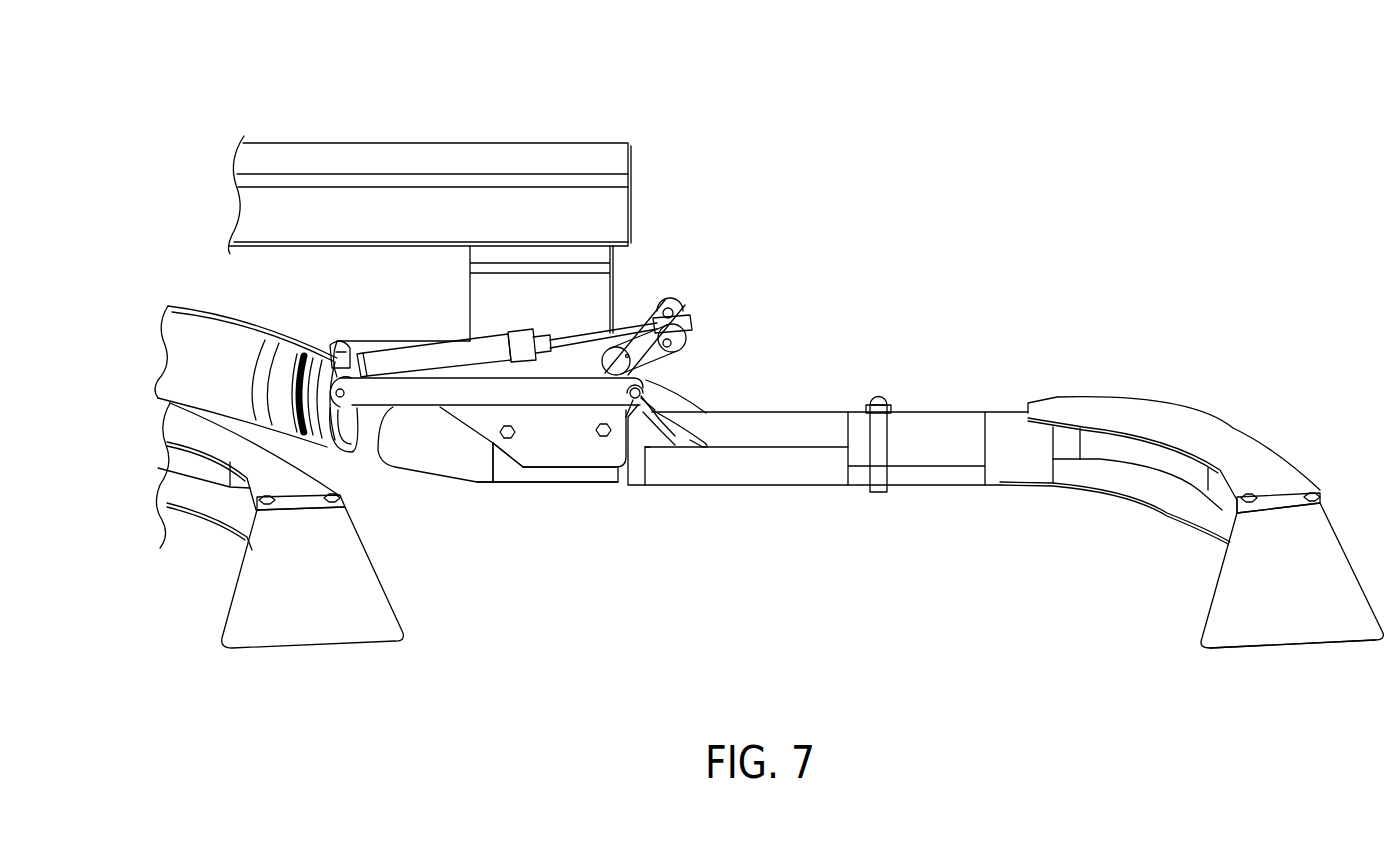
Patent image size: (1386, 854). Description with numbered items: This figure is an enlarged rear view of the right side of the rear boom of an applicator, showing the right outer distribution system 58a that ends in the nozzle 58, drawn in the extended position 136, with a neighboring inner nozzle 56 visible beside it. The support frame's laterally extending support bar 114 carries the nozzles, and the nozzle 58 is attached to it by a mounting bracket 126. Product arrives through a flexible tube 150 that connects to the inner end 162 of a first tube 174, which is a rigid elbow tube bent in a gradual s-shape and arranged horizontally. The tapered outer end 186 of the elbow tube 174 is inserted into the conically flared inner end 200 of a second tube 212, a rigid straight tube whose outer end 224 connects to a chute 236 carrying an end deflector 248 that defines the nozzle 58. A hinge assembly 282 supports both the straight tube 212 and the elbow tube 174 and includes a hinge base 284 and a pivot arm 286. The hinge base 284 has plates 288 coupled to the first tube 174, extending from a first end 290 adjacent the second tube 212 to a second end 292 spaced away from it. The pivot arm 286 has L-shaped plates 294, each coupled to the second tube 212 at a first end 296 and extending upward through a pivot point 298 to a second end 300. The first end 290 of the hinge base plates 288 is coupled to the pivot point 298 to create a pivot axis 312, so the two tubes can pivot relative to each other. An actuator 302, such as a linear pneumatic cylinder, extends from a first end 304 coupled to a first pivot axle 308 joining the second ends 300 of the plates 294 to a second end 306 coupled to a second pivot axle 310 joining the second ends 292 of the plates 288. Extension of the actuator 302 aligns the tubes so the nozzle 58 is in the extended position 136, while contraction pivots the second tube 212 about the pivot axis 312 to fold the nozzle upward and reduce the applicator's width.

The nozzle 56 is at (305, 630).
The nozzle 58 is at (1267, 635).
The right outer distribution system 58a is at (1137, 423).
The support bar 114 is at (371, 160).
The mounting bracket 126 is at (550, 287).
The extended position 136 is at (1085, 160).
The flexible tube 150 is at (210, 324).
The inner end 162 is at (342, 397).
The first tube 174 is at (448, 470).
The outer end 186 is at (585, 475).
The inner end 200 is at (637, 480).
The second tube 212 is at (785, 472).
The outer end 224 is at (1010, 470).
The chute 236 is at (1160, 492).
The end deflector 248 is at (1320, 627).
The hinge assembly 282 is at (588, 460).
The hinge base 284 is at (565, 455).
The pivot arm 286 is at (660, 440).
The plates 288 is at (538, 457).
The first end 290 is at (650, 384).
The second end 292 is at (373, 442).
The plates 294 is at (680, 440).
The first end 296 is at (700, 440).
The pivot point 298 is at (645, 368).
The second end 300 is at (672, 348).
The actuator 302 is at (443, 353).
The first end 304 is at (672, 317).
The second end 306 is at (367, 372).
The first pivot axle 308 is at (668, 308).
The second pivot axle 310 is at (338, 346).
The pivot axis 312 is at (647, 440).